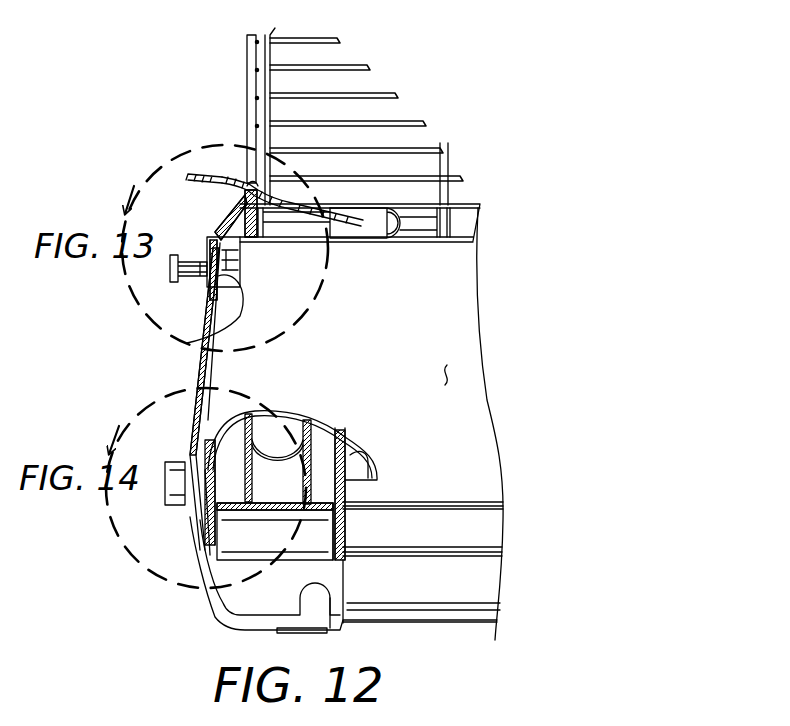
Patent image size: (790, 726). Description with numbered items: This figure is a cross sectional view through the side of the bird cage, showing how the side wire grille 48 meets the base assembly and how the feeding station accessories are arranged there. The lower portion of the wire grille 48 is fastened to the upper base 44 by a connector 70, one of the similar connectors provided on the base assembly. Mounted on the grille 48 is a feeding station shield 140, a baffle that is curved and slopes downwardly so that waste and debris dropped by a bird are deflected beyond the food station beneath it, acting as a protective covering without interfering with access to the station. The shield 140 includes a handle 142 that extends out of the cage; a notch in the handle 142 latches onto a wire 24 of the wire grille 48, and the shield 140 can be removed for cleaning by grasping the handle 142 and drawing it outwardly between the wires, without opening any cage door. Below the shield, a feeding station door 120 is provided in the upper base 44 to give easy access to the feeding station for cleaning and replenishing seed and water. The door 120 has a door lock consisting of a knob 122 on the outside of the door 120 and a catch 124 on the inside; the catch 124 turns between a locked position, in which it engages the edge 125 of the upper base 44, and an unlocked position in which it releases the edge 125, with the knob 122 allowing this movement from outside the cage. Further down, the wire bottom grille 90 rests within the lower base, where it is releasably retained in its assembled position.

The wire grille 48 is at (248, 72).
The wire 24 is at (257, 183).
The feeding station shield 140 is at (212, 171).
The handle 142 is at (200, 181).
The connector 70 is at (365, 207).
The edge of the upper base member 125 is at (260, 243).
The knob 122 is at (172, 270).
The catch 124 is at (187, 343).
The feeding station door 120 is at (198, 362).
The upper base 44 is at (450, 375).
The bottom grille 90 is at (440, 548).